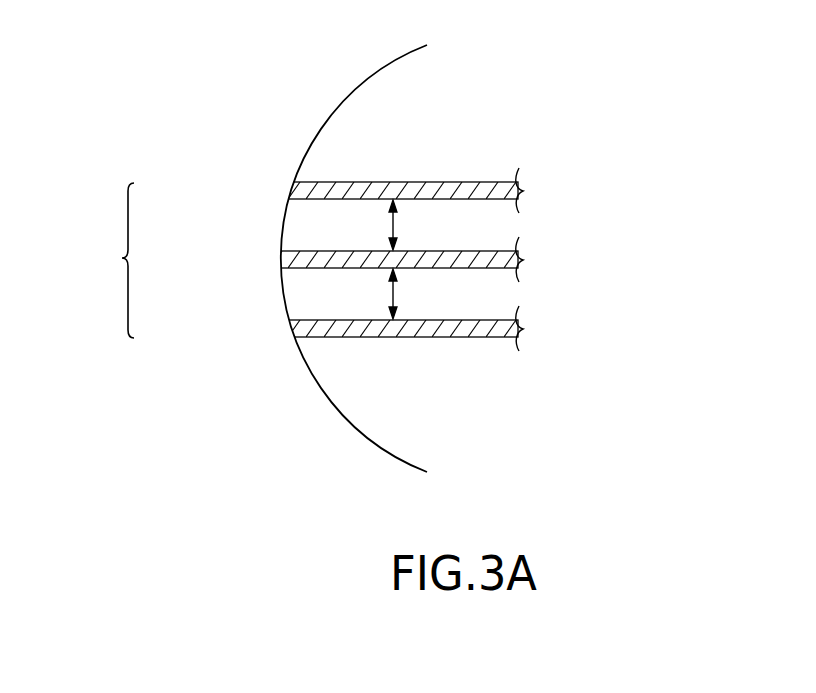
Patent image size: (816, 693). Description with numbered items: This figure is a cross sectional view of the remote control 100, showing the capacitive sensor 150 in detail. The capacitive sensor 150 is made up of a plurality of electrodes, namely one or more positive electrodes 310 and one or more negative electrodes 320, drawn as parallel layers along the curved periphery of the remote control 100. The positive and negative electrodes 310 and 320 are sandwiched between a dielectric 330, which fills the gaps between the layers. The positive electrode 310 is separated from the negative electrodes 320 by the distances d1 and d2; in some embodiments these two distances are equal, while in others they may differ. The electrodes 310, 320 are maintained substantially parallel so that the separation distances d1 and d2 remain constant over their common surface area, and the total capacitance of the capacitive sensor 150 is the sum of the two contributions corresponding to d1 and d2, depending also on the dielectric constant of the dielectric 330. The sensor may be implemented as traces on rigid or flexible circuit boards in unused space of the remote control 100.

The remote control 100 is at (301, 131).
The capacitive sensor 150 is at (109, 260).
The positive electrode 310 is at (523, 260).
The negative electrodes 320 is at (523, 191).
The dielectric 330 is at (300, 300).
The distance d1 is at (395, 227).
The distance d2 is at (395, 296).